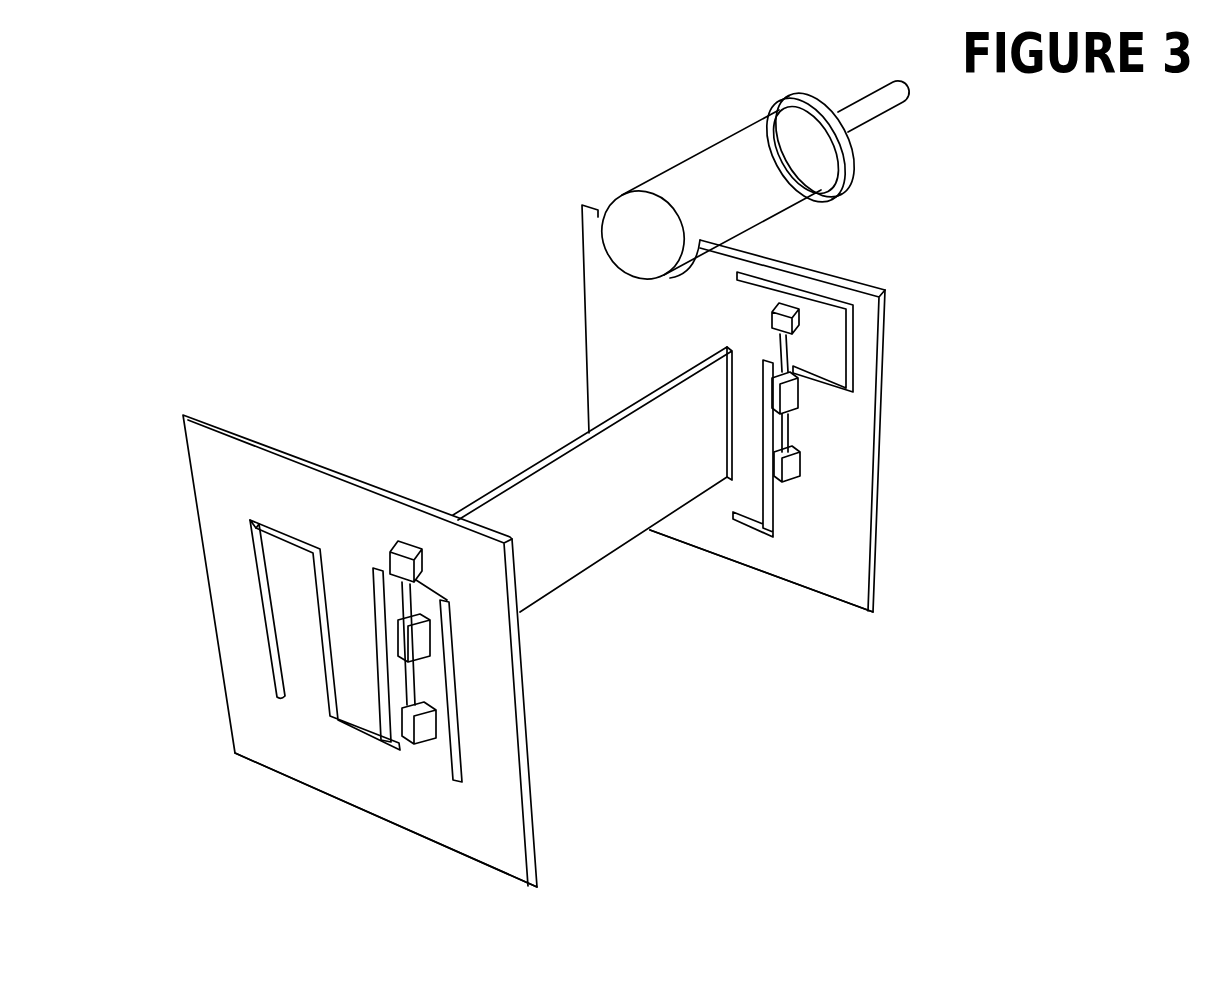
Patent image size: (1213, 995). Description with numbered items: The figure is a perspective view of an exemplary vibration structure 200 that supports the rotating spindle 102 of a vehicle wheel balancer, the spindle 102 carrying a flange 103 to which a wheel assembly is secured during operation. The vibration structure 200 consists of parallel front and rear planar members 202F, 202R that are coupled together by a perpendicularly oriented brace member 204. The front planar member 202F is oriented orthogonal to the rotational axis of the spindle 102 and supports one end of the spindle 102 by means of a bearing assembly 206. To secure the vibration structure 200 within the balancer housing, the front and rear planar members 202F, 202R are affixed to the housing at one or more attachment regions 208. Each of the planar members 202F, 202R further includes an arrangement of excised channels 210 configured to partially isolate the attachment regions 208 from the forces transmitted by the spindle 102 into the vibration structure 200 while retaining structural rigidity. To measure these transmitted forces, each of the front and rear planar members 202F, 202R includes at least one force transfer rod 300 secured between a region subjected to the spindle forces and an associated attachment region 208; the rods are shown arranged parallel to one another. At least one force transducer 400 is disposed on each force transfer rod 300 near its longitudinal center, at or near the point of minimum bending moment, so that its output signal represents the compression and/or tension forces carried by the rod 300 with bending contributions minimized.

The spindle 102 is at (720, 163).
The flange 103 is at (866, 183).
The vibration structure 200 is at (574, 522).
The front planar member 202F is at (612, 309).
The rear planar member 202R is at (315, 501).
The brace member 204 is at (567, 556).
The bearing assembly 206 is at (619, 207).
The attachment region 208 is at (337, 795).
The excised channel 210 is at (309, 632).
The force transfer rod 300 is at (435, 704).
The force transducer 400 is at (446, 665).